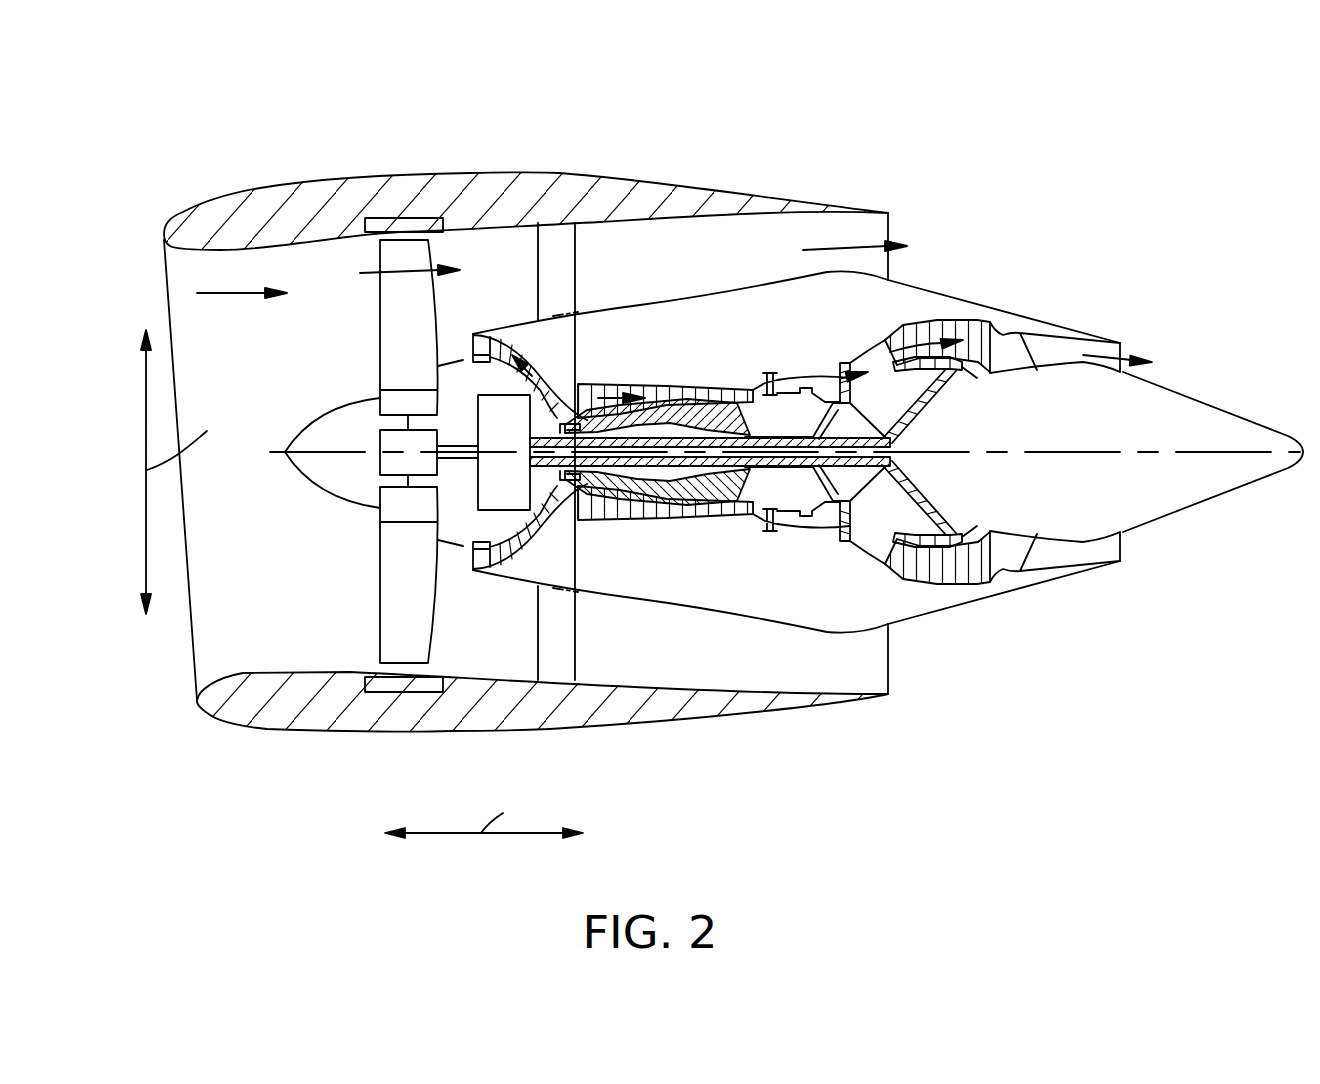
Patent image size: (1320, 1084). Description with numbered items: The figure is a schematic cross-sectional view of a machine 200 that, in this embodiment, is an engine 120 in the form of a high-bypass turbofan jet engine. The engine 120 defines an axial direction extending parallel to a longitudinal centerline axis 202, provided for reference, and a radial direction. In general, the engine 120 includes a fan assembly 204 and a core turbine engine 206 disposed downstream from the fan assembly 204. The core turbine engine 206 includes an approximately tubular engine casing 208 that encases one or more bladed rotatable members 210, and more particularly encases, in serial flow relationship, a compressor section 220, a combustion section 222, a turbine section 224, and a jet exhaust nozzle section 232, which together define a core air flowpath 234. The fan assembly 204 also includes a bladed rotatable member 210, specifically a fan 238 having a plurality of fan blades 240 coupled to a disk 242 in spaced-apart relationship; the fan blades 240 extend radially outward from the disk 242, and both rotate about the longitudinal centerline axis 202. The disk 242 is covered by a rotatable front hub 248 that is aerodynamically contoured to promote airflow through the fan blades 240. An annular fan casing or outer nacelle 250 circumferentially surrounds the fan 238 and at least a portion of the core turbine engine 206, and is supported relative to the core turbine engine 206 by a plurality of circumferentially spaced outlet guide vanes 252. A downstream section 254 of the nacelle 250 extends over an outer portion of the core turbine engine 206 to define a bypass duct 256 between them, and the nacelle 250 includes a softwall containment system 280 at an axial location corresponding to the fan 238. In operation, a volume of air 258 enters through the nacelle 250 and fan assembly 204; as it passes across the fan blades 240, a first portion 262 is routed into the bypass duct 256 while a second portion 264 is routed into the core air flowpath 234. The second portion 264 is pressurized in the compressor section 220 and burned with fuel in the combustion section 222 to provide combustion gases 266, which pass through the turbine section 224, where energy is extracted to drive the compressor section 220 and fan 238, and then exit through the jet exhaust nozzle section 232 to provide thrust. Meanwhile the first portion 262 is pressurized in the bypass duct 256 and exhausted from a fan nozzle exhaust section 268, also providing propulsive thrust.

The machine 200 is at (1198, 108).
The engine 120 is at (1012, 214).
The longitudinal centerline axis 202 is at (1067, 450).
The fan assembly 204 is at (262, 250).
The core turbine engine 206 is at (634, 322).
The engine casing 208 is at (840, 632).
The bladed rotatable members 210 is at (651, 547).
The compressor section 220 is at (550, 318).
The combustion section 222 is at (785, 550).
The turbine section 224 is at (944, 609).
The jet exhaust nozzle section 232 is at (1053, 577).
The core air flowpath 234 is at (564, 568).
The fan 238 is at (315, 523).
The fan blades 240 is at (383, 618).
The disk 242 is at (390, 400).
The rotatable front hub 248 is at (292, 460).
The outer nacelle 250 is at (467, 732).
The outlet guide vanes 252 is at (577, 253).
The downstream section 254 is at (737, 198).
The bypass duct 256 is at (684, 266).
The volume of air 258 is at (223, 293).
The first portion 262 is at (392, 266).
The second portion 264 is at (487, 343).
The combustion gases 266 is at (930, 342).
The fan nozzle exhaust section 268 is at (888, 223).
The softwall containment system 280 is at (397, 218).